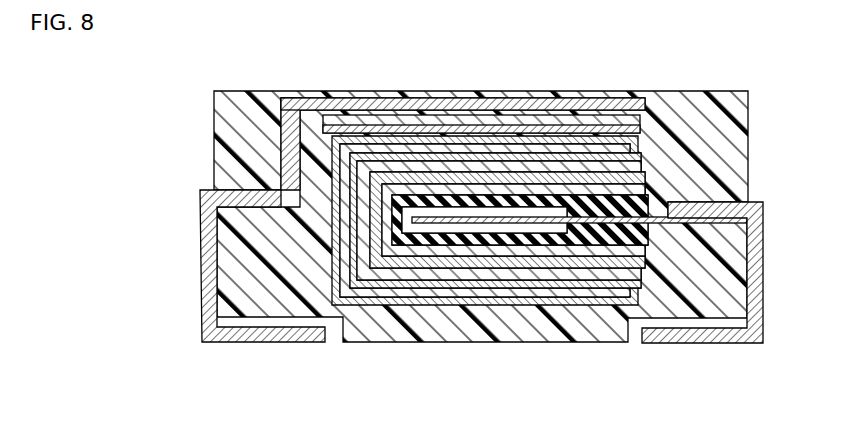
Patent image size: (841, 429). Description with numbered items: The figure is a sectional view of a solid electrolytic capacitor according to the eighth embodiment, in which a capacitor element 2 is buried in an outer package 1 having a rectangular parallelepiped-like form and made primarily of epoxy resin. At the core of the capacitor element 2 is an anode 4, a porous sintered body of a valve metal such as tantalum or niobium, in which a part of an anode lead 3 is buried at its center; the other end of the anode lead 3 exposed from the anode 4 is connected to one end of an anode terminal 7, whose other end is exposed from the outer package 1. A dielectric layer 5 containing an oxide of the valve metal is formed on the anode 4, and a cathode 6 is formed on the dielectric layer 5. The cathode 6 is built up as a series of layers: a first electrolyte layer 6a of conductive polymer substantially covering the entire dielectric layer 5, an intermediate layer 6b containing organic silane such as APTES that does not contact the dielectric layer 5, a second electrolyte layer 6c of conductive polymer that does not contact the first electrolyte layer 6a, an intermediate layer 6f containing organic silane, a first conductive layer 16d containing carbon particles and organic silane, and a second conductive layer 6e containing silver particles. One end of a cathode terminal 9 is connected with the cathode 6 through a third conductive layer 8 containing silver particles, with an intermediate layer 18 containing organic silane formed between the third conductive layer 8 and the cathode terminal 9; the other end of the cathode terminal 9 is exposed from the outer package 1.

The outer package 1 is at (214, 129).
The capacitor element 2 is at (464, 268).
The anode lead 3 is at (680, 221).
The anode 4 is at (415, 246).
The dielectric layer 5 is at (386, 250).
The cathode 6 is at (490, 268).
The first electrolyte layer 6a is at (437, 301).
The intermediate layer 6b is at (478, 292).
The second electrolyte layer 6c is at (516, 283).
The first conductive layer 16d is at (594, 259).
The second conductive layer 6e is at (430, 367).
The intermediate layer 6f is at (556, 272).
The anode terminal 7 is at (759, 315).
The third conductive layer 8 is at (640, 128).
The cathode terminal 9 is at (202, 262).
The intermediate layer 18 is at (645, 111).